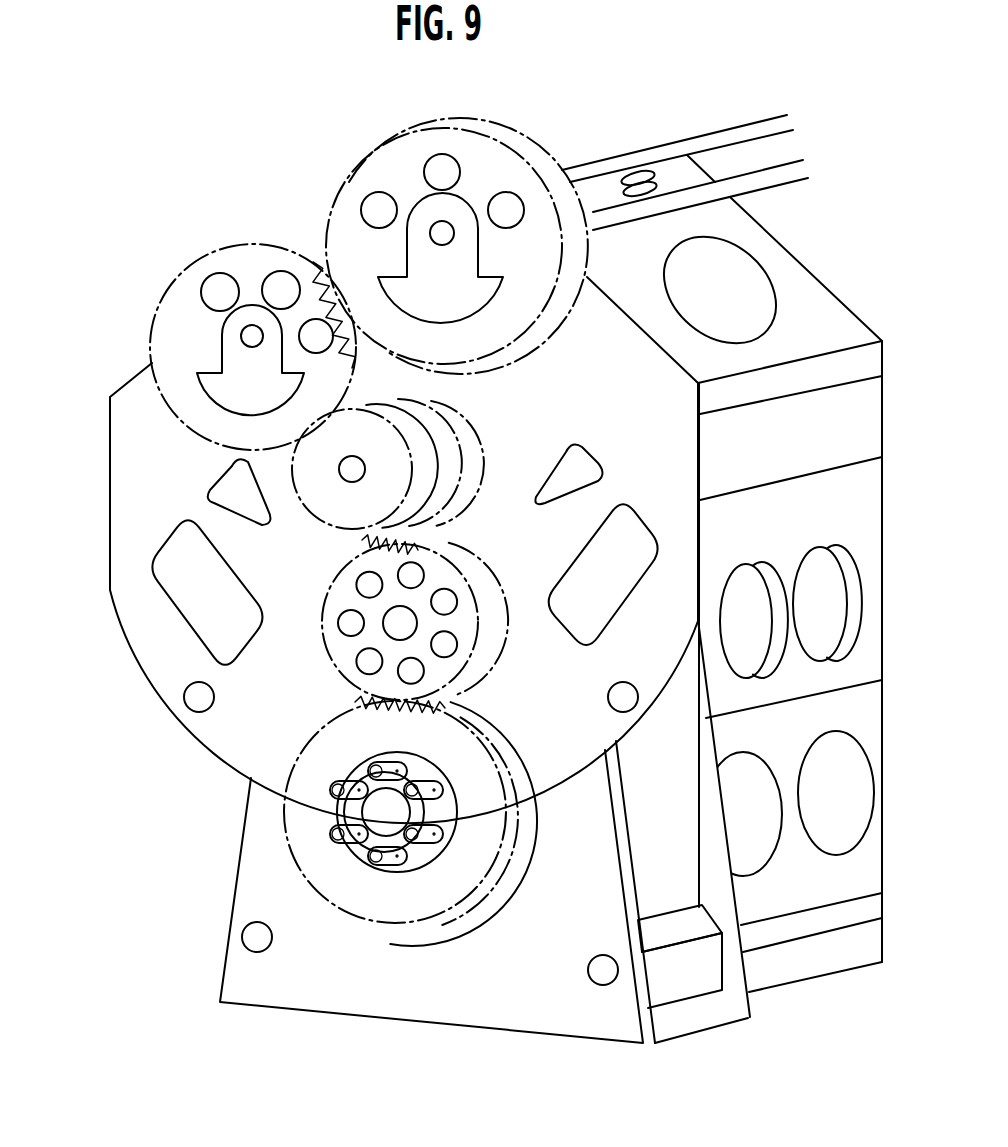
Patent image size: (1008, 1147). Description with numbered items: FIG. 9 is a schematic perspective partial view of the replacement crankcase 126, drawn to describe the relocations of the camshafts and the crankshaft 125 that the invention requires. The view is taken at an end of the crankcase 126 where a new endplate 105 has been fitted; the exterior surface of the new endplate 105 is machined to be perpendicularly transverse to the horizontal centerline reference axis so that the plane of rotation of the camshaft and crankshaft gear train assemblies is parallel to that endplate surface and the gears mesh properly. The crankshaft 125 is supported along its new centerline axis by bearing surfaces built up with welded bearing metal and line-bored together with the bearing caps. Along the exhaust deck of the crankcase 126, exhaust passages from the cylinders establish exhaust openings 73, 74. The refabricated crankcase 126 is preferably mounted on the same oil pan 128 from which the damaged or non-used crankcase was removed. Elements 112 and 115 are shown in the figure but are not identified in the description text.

The exhaust opening 73 is at (658, 190).
The exhaust opening 74 is at (635, 175).
The new endplate 105 is at (118, 347).
The gear mounting plate 112 is at (640, 380).
The support frame 115 is at (342, 1060).
The crankshaft 125 is at (378, 806).
The replacement crankcase 126 is at (826, 275).
The oil pan 128 is at (597, 935).